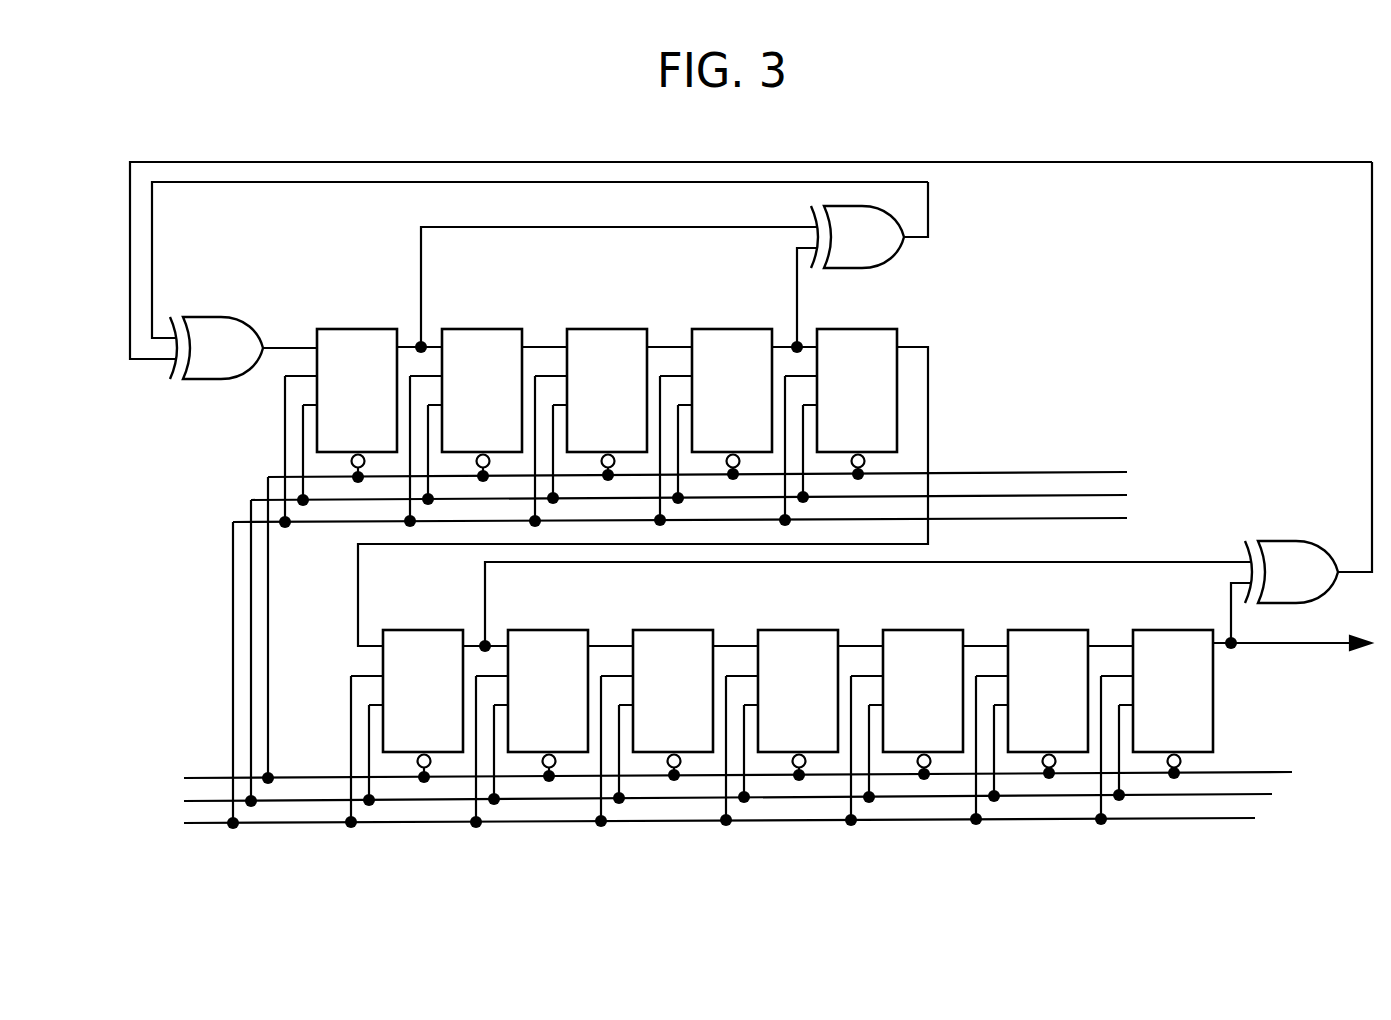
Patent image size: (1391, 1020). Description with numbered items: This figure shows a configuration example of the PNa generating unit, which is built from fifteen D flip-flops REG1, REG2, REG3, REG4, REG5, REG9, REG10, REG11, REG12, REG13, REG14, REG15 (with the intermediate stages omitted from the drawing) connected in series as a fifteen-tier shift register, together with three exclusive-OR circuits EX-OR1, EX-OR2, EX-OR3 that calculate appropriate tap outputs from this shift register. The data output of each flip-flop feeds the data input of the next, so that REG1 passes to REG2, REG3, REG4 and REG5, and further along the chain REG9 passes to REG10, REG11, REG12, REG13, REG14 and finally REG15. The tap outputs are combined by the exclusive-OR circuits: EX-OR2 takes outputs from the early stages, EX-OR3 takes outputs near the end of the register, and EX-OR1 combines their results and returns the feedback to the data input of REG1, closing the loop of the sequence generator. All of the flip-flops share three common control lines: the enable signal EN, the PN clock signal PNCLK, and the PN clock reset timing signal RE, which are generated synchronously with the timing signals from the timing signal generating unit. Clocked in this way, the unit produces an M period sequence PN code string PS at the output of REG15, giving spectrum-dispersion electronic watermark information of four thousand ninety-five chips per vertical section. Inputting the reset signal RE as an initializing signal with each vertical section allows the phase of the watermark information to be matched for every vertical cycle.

The D flip-flop REG1 is at (338, 412).
The D flip-flop REG2 is at (463, 412).
The D flip-flop REG3 is at (588, 412).
The D flip-flop REG4 is at (713, 411).
The D flip-flop REG5 is at (838, 411).
The D flip-flop REG9 is at (404, 710).
The D flip-flop REG10 is at (531, 710).
The D flip-flop REG11 is at (656, 709).
The D flip-flop REG12 is at (781, 709).
The D flip-flop REG13 is at (906, 709).
The D flip-flop REG14 is at (1031, 708).
The D flip-flop REG15 is at (1156, 708).
The exclusive-OR circuit EX-OR1 is at (210, 318).
The exclusive-OR circuit EX-OR2 is at (898, 254).
The exclusive-OR circuit EX-OR3 is at (1290, 540).
The PN clock reset timing signal RE is at (195, 778).
The PN clock signal PNCLK is at (137, 800).
The enable signal EN is at (195, 823).
The PN code string PS is at (1322, 660).